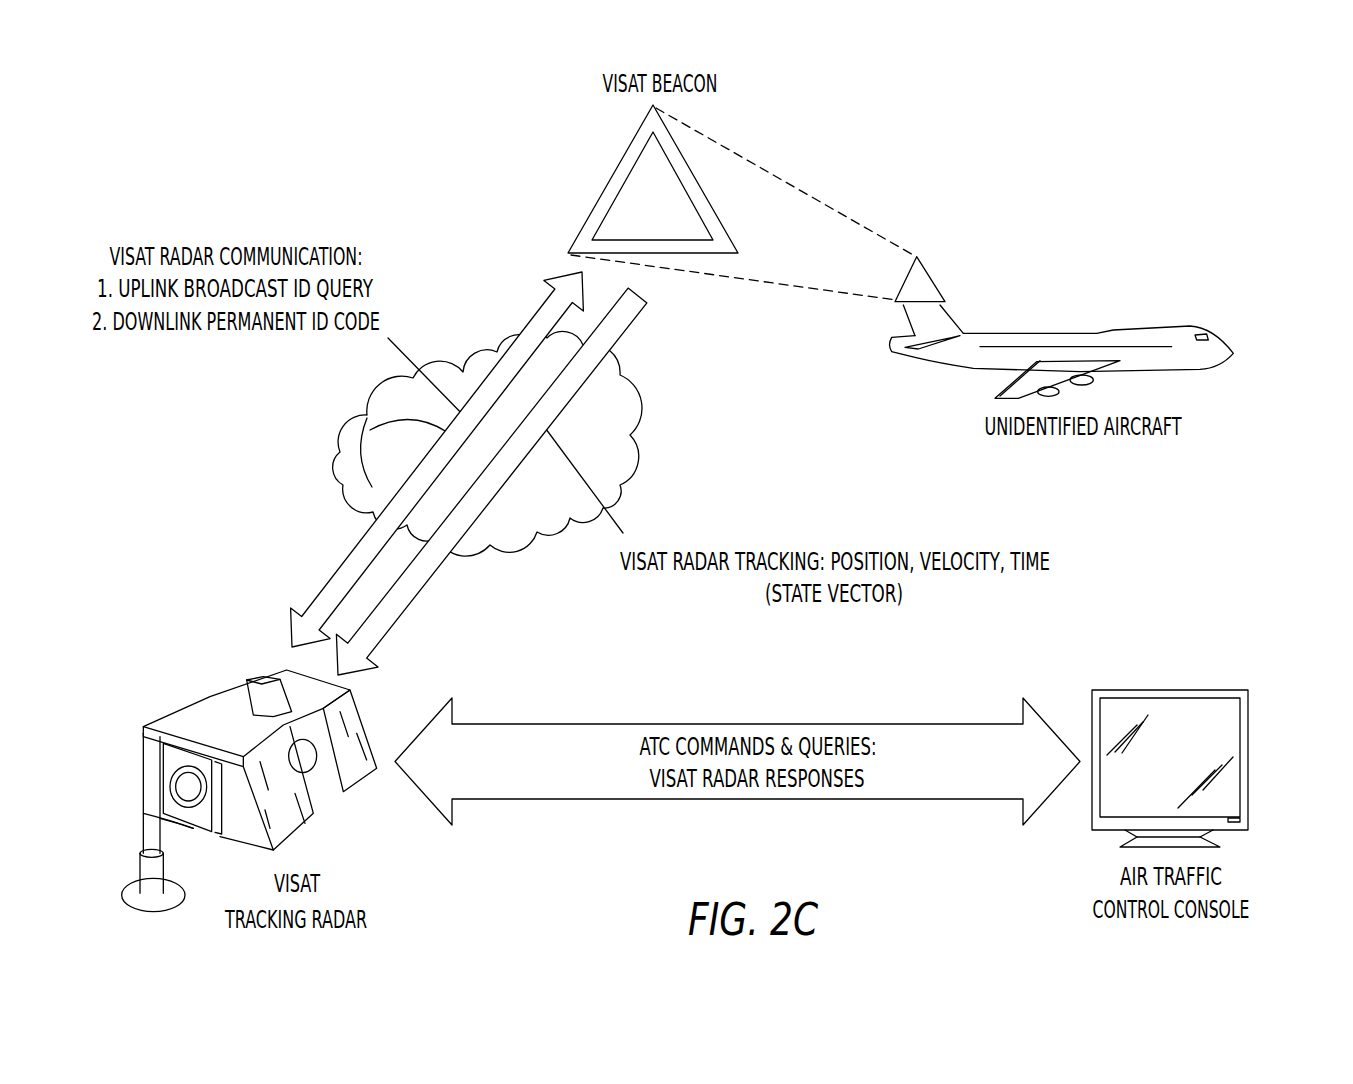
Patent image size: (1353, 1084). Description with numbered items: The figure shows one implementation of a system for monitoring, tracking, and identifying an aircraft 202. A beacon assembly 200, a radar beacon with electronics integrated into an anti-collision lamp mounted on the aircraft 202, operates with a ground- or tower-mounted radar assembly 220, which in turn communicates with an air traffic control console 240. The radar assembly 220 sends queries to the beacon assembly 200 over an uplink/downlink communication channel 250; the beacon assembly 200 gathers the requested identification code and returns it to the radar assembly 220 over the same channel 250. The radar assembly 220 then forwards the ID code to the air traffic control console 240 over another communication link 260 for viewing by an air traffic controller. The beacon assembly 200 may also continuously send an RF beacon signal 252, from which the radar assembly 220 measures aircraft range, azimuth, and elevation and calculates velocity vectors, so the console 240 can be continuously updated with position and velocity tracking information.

The beacon assembly 200 is at (572, 170).
The aircraft 202 is at (1222, 389).
The radar assembly 220 is at (212, 659).
The air traffic control console 240 is at (1250, 795).
The uplink/downlink communication channel 250 is at (335, 560).
The RF beacon signal 252 is at (418, 587).
The communication link 260 is at (767, 800).